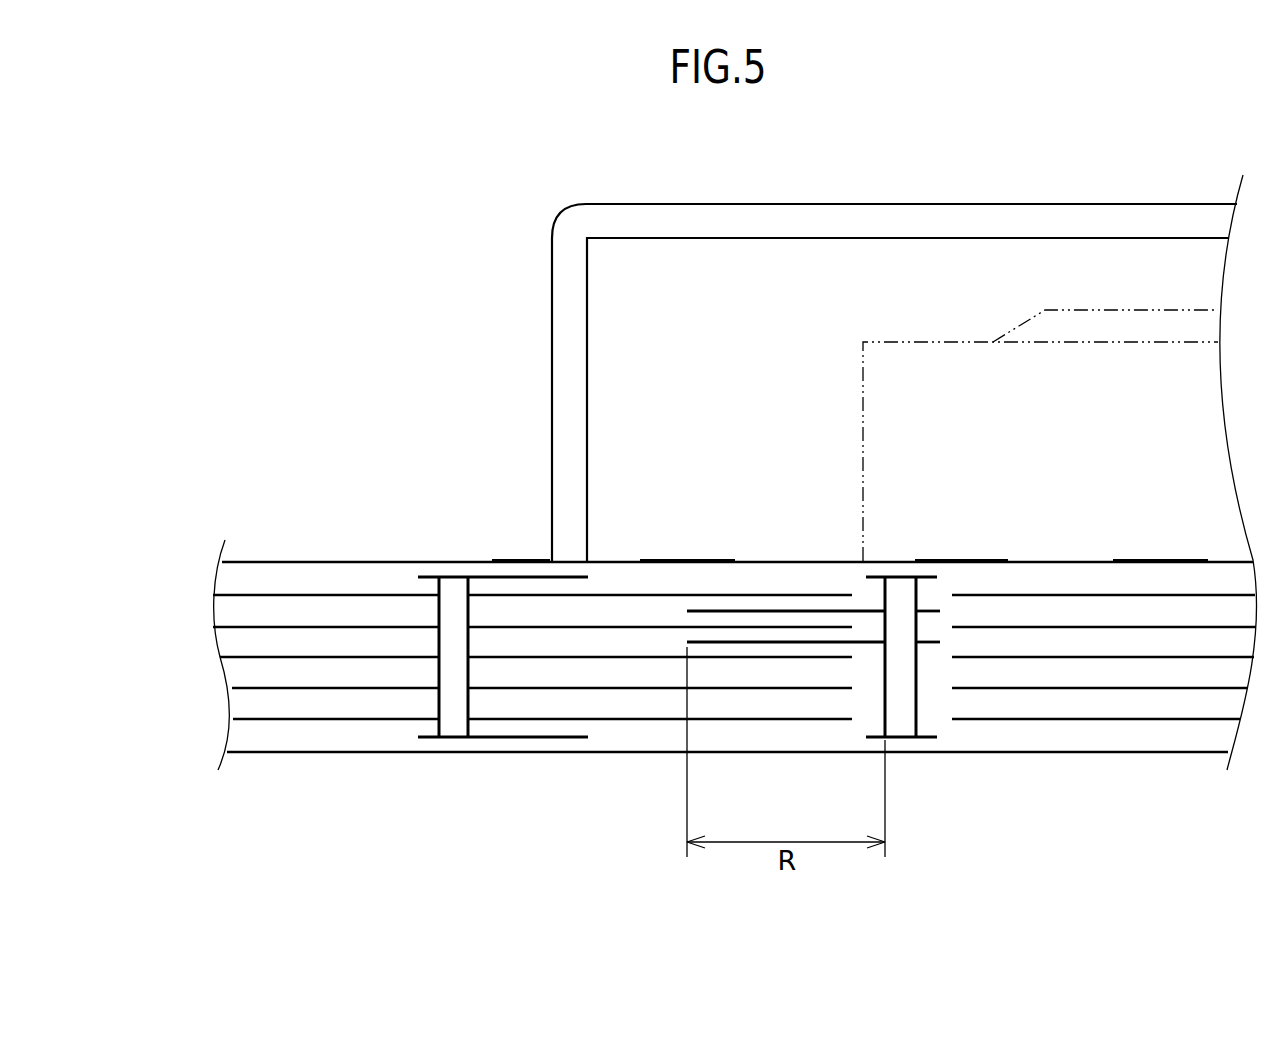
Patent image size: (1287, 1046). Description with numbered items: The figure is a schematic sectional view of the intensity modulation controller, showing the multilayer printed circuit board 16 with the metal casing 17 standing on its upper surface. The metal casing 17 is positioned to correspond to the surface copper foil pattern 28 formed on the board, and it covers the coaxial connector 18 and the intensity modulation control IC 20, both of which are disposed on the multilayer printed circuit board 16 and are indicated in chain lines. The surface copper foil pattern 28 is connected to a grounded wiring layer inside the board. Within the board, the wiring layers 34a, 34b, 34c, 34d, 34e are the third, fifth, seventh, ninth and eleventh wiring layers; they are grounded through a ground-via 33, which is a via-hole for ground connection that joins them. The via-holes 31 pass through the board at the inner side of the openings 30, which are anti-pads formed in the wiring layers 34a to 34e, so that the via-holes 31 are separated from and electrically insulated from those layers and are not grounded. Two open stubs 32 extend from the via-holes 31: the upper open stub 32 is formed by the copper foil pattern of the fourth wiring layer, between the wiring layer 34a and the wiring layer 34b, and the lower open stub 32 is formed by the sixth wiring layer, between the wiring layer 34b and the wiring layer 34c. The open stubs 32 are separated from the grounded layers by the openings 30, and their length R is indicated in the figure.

The multilayer printed circuit board 16 is at (326, 575).
The metal casing 17 is at (764, 202).
The coaxial connector 18 is at (1103, 310).
The intensity modulation control IC 20 is at (863, 437).
The surface copper foil pattern 28 is at (516, 559).
The openings 30 is at (952, 657).
The via-holes 31 is at (902, 720).
The open stubs 32 is at (740, 612).
The ground-via 33 is at (455, 720).
The wiring layer 34a is at (237, 593).
The wiring layer 34b is at (237, 625).
The wiring layer 34c is at (237, 656).
The wiring layer 34d is at (247, 687).
The wiring layer 34e is at (247, 718).